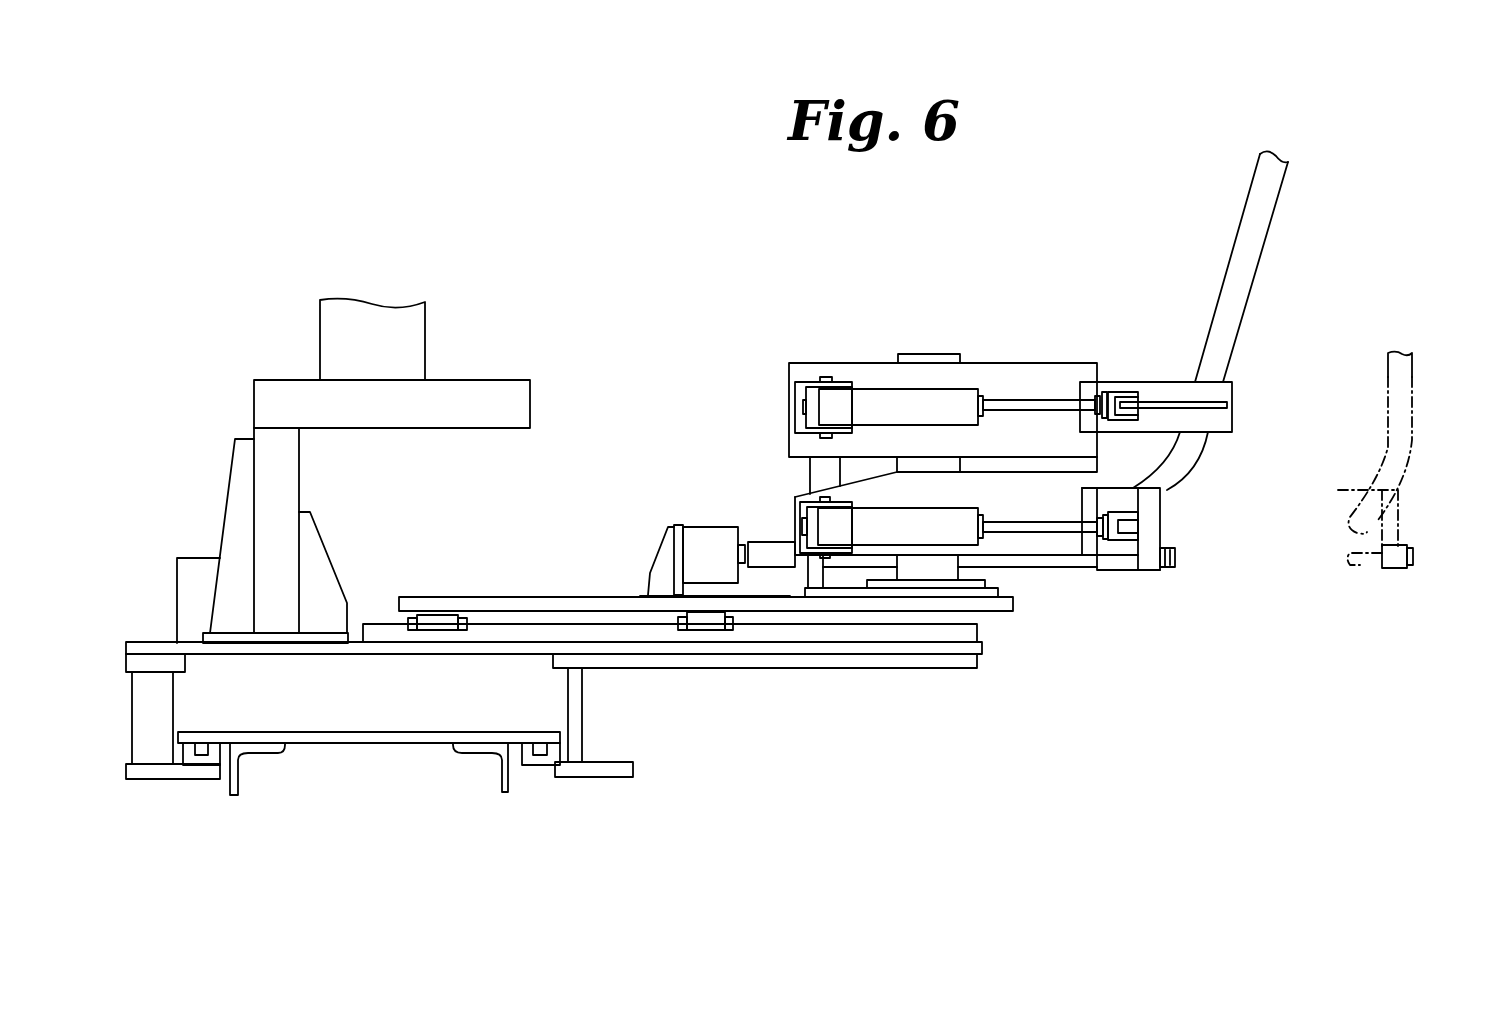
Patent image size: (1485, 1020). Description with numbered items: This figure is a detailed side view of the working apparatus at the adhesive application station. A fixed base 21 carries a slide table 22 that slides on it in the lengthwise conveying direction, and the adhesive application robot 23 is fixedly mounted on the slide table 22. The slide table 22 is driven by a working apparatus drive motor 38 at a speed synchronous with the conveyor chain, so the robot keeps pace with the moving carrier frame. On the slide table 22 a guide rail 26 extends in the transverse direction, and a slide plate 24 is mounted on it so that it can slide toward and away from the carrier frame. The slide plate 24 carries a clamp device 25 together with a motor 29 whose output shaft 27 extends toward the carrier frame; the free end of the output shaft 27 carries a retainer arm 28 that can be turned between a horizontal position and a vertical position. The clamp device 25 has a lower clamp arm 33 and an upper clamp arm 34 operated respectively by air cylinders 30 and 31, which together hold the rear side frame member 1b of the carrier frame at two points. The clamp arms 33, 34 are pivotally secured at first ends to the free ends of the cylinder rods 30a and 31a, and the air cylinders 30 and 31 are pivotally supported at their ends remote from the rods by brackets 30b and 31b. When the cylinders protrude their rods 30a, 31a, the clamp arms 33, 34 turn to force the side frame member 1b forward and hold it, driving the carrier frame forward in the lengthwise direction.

The rear side frame member 1b is at (1262, 235).
The base 21 is at (348, 748).
The slide table 22 is at (146, 652).
The adhesive application robot 23 is at (282, 390).
The slide plate 24 is at (1013, 603).
The clamp device 25 is at (928, 352).
The guide rail 26 is at (850, 632).
The output shaft 27 is at (1125, 557).
The retainer arm 28 is at (1160, 503).
The motor 29 is at (703, 538).
The air cylinder 30 is at (946, 527).
The cylinder rod 30a is at (1026, 526).
The bracket 30b is at (793, 500).
The air cylinder 31 is at (883, 402).
The cylinder rod 31a is at (1026, 398).
The bracket 31b is at (812, 382).
The lower clamp arm 33 is at (1140, 530).
The upper clamp arm 34 is at (1163, 392).
The working apparatus drive motor 38 is at (193, 572).